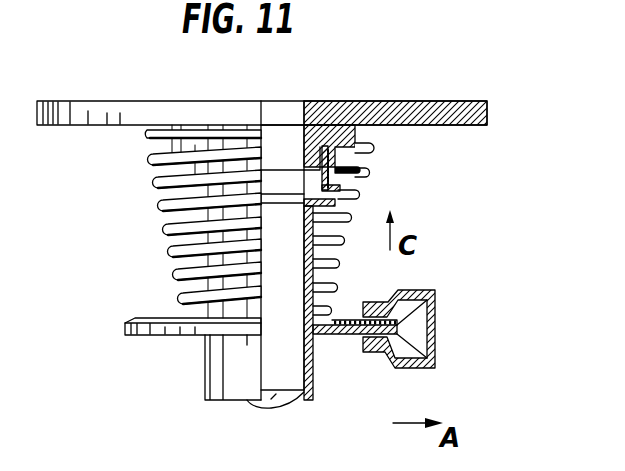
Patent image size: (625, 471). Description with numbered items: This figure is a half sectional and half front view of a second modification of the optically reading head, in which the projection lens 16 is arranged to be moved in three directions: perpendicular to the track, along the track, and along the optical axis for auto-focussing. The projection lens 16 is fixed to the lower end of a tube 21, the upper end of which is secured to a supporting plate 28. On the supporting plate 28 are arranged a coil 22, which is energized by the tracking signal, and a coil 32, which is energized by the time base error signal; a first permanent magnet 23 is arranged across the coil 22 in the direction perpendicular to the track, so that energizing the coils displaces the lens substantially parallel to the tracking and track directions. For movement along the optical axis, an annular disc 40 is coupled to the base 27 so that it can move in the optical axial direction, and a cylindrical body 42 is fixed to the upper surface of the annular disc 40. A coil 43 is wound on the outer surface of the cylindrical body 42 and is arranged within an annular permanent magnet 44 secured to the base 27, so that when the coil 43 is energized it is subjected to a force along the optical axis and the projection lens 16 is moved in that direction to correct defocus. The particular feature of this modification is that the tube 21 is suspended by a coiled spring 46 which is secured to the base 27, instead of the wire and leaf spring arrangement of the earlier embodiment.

The projection lens 16 is at (246, 403).
The tube 21 is at (283, 400).
The coil 22 is at (443, 289).
The first permanent magnet 23 is at (436, 335).
The base 27 is at (402, 104).
The supporting plate 28 is at (346, 337).
The coil 32 is at (348, 322).
The annular disc 40 is at (377, 203).
The cylindrical body 42 is at (330, 185).
The coil 43 is at (344, 132).
The annular permanent magnet 44 is at (360, 166).
The coiled spring 46 is at (163, 203).